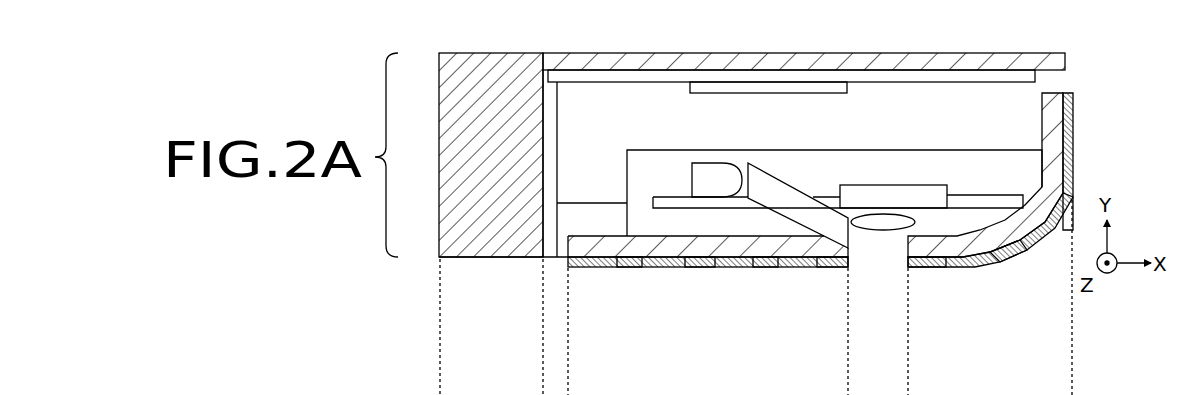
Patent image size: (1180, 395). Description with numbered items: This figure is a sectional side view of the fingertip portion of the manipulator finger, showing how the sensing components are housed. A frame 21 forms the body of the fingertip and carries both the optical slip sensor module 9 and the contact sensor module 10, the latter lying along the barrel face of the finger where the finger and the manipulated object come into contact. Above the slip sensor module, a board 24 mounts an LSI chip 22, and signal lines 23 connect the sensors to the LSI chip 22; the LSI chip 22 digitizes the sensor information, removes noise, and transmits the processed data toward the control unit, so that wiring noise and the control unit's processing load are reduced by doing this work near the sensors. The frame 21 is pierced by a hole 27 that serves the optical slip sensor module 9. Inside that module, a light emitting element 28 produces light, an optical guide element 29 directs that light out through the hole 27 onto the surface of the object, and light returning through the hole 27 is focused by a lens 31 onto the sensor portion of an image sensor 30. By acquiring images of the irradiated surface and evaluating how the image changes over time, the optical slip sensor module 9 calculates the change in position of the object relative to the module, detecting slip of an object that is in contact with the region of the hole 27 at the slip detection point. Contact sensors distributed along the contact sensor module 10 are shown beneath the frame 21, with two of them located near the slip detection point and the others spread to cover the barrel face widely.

The optical slip sensor module 9 is at (970, 150).
The contact sensor module 10 is at (1073, 149).
The frame 21 is at (455, 113).
The LSI chip 22 is at (808, 81).
The signal lines 23 is at (559, 119).
The board 24 is at (962, 79).
The hole 27 is at (877, 255).
The light emitting element 28 is at (695, 178).
The optical guide element 29 is at (790, 193).
The image sensor 30 is at (917, 195).
The lens 31 is at (873, 219).